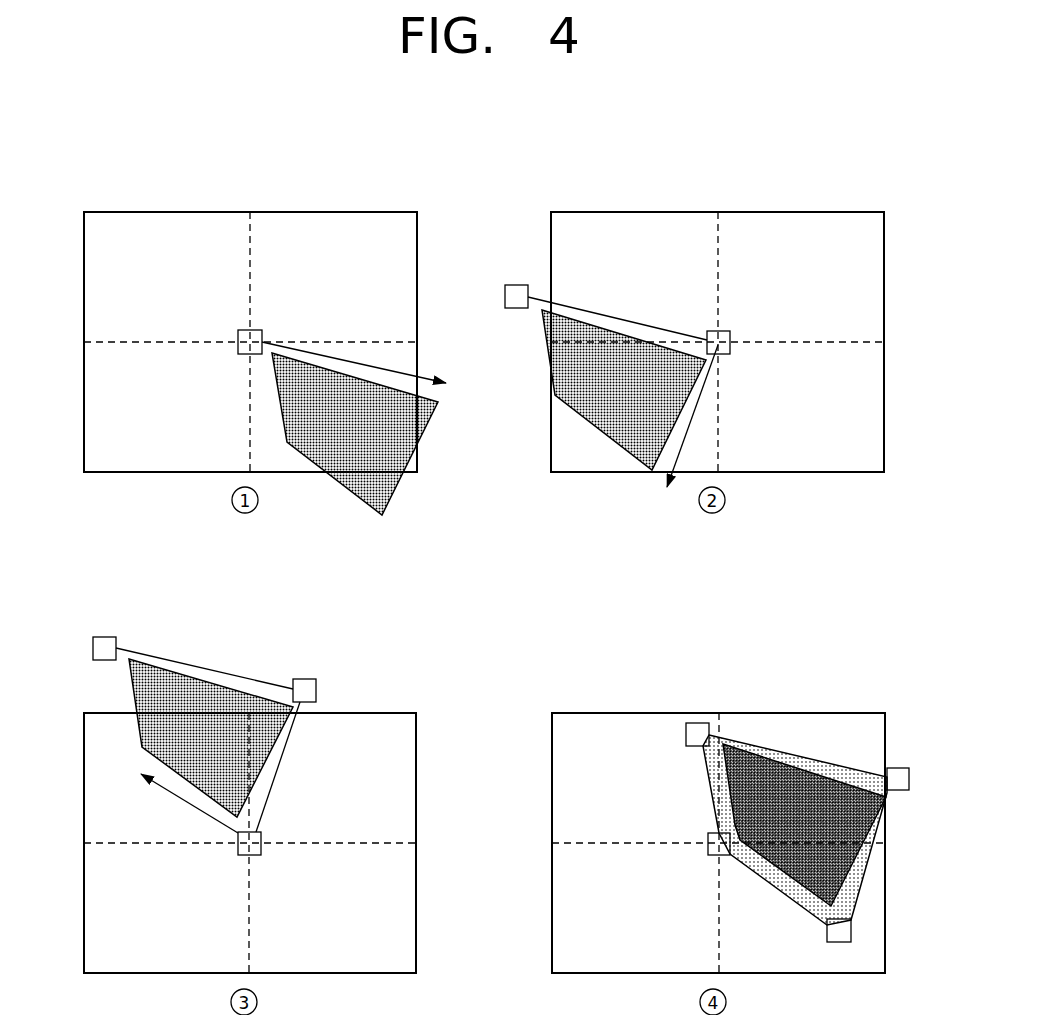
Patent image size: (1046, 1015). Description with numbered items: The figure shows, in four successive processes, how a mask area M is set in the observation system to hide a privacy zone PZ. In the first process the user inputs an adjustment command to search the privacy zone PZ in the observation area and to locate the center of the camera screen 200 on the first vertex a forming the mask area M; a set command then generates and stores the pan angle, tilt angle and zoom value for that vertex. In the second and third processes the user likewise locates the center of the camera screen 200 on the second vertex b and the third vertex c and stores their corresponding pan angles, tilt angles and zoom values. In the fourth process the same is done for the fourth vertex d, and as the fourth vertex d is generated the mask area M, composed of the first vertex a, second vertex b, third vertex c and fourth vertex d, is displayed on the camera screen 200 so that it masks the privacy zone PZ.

The camera screen 200 is at (207, 212).
The first vertex a is at (258, 330).
The second vertex b is at (727, 331).
The third vertex c is at (260, 824).
The fourth vertex d is at (705, 855).
The privacy zone PZ is at (507, 608).
The mask area M is at (797, 755).